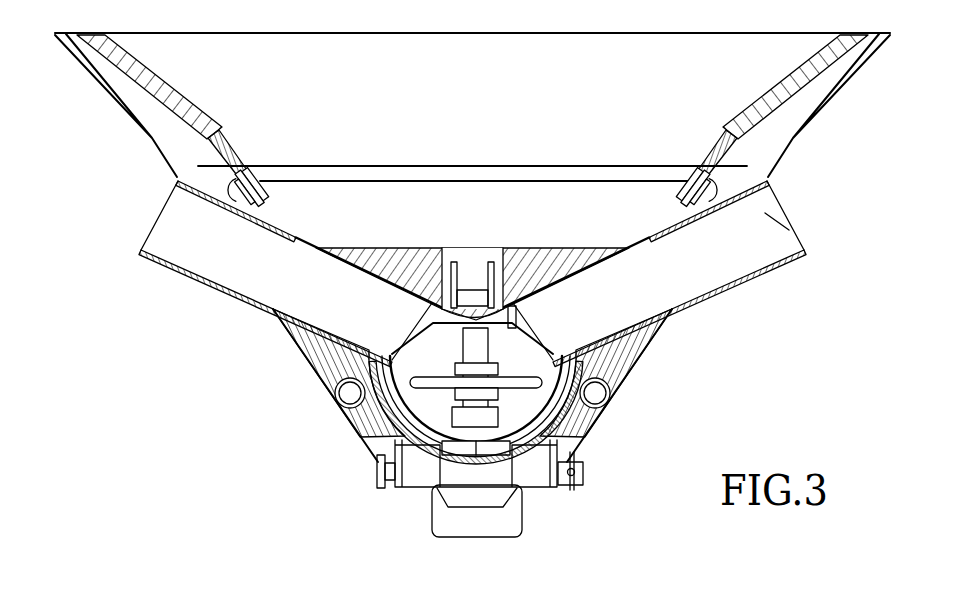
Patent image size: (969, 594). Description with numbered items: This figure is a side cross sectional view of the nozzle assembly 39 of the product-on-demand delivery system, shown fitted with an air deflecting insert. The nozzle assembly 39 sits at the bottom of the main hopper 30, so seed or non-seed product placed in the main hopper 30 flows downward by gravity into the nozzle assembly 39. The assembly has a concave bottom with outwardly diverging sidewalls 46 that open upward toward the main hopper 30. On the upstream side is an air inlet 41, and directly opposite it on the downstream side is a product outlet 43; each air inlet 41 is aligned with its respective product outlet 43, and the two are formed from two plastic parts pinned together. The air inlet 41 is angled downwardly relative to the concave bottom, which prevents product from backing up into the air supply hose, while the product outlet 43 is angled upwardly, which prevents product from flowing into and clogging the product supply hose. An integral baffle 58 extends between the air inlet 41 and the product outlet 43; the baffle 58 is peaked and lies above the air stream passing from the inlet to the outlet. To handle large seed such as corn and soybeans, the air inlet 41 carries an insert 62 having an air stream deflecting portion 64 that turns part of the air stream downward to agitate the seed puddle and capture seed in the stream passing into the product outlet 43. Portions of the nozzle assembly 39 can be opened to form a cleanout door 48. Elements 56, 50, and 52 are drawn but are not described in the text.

The main hopper 30 is at (456, 112).
The outwardly diverging sidewalls 46 is at (226, 166).
The product outlet 43 is at (213, 267).
The air inlet 41 is at (728, 277).
The insert 62 is at (797, 228).
The baffle 58 is at (466, 250).
The air stream deflecting portion 64 is at (527, 317).
The nozzle assembly 39 is at (230, 410).
The bracket 56 is at (362, 439).
The cleanout door 48 is at (433, 462).
The bolt 50 is at (389, 485).
The bottom bracket 52 is at (476, 522).